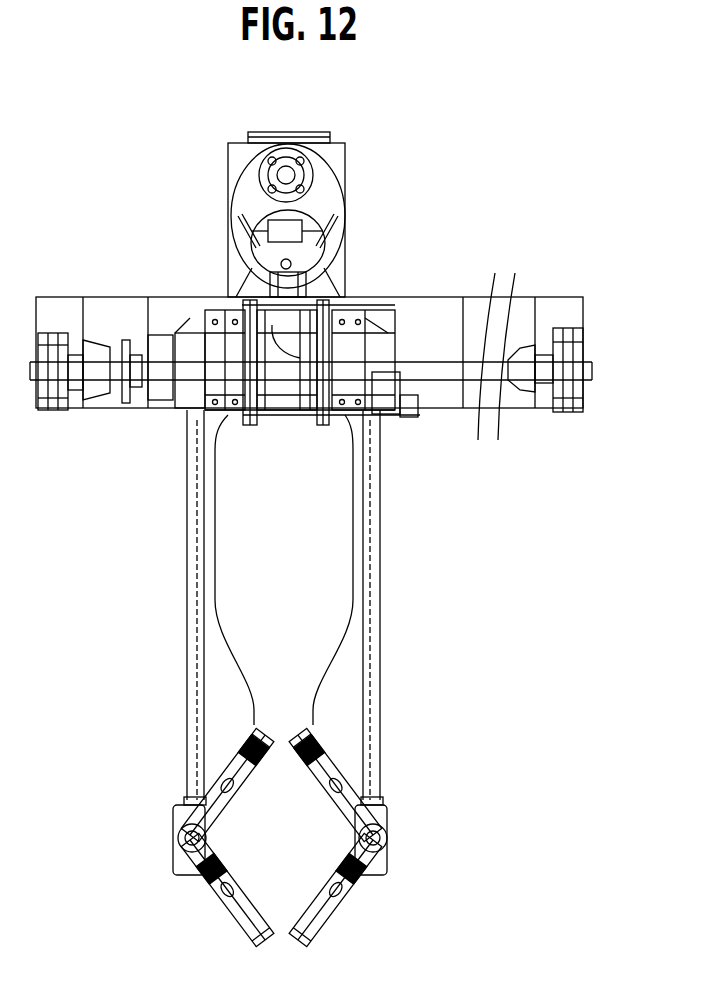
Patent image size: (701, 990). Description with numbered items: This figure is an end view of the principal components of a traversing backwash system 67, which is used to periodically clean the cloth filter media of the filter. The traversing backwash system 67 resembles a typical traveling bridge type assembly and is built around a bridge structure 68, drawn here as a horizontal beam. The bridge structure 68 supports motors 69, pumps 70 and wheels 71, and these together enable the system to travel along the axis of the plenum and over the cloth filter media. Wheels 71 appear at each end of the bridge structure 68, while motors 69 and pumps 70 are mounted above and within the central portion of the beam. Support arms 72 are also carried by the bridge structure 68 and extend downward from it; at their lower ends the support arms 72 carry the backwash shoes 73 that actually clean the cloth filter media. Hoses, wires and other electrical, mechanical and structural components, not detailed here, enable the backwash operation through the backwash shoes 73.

The traversing backwash system 67 is at (447, 581).
The bridge structure 68 is at (447, 297).
The motors 69 is at (332, 197).
The pumps 70 is at (337, 263).
The wheels 71 is at (50, 413).
The support arms 72 is at (187, 708).
The backwash shoes 73 is at (313, 782).